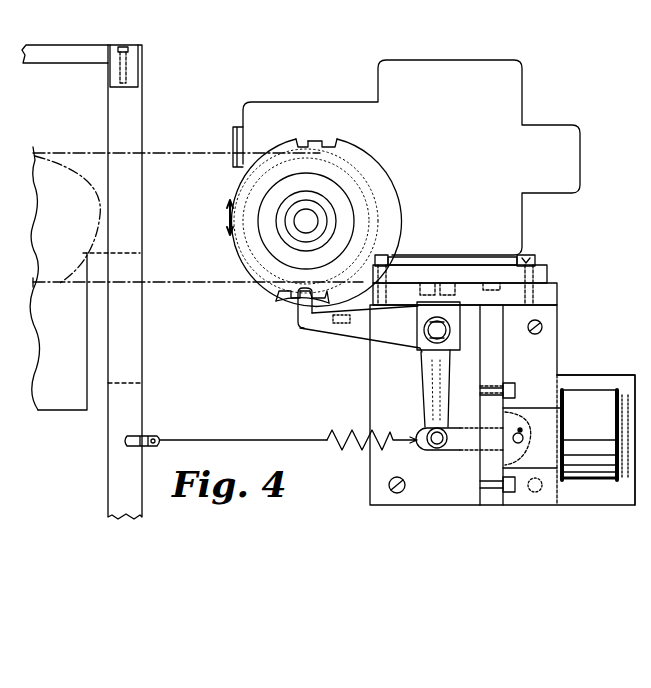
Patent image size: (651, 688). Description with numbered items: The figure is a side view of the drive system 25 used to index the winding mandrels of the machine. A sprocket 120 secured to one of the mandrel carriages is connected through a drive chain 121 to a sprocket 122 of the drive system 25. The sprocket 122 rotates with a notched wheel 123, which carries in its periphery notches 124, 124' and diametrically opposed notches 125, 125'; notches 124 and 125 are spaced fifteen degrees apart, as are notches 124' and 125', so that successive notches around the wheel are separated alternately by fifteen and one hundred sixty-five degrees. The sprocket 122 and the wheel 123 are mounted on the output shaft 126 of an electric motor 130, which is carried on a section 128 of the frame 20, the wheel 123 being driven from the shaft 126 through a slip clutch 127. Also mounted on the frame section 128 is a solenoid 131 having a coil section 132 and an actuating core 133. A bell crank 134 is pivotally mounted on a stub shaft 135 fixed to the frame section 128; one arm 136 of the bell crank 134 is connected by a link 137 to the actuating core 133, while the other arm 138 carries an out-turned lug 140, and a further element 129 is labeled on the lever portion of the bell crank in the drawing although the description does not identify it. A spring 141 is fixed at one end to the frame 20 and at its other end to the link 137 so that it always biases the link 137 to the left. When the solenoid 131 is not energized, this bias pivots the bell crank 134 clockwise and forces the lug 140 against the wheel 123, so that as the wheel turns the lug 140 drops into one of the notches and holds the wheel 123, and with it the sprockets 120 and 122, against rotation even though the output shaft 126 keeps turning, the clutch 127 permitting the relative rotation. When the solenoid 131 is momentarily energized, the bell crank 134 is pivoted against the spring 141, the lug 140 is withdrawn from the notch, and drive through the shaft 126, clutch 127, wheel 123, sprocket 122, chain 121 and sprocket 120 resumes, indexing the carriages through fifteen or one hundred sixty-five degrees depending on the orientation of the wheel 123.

The frame 20 is at (95, 422).
The drive system 25 is at (358, 470).
The sprocket 120 is at (100, 212).
The drive chain 121 is at (212, 156).
The sprocket 122 is at (373, 215).
The notched wheel 123 is at (220, 232).
The notch 124 is at (328, 299).
The notch 124' is at (292, 125).
The notch 125 is at (280, 307).
The notch 125' is at (331, 130).
The output shaft 126 is at (307, 225).
The slip clutch 127 is at (340, 192).
The frame section 128 is at (557, 293).
The lever 129 is at (337, 335).
The electric motor 130 is at (406, 157).
The solenoid 131 is at (590, 376).
The coil section 132 is at (595, 390).
The actuating core 133 is at (533, 415).
The bell crank 134 is at (378, 342).
The stub shaft 135 is at (440, 338).
The arm 136 is at (422, 385).
The link 137 is at (472, 447).
The arm 138 is at (360, 326).
The out-turned lug 140 is at (305, 326).
The spring 141 is at (355, 432).